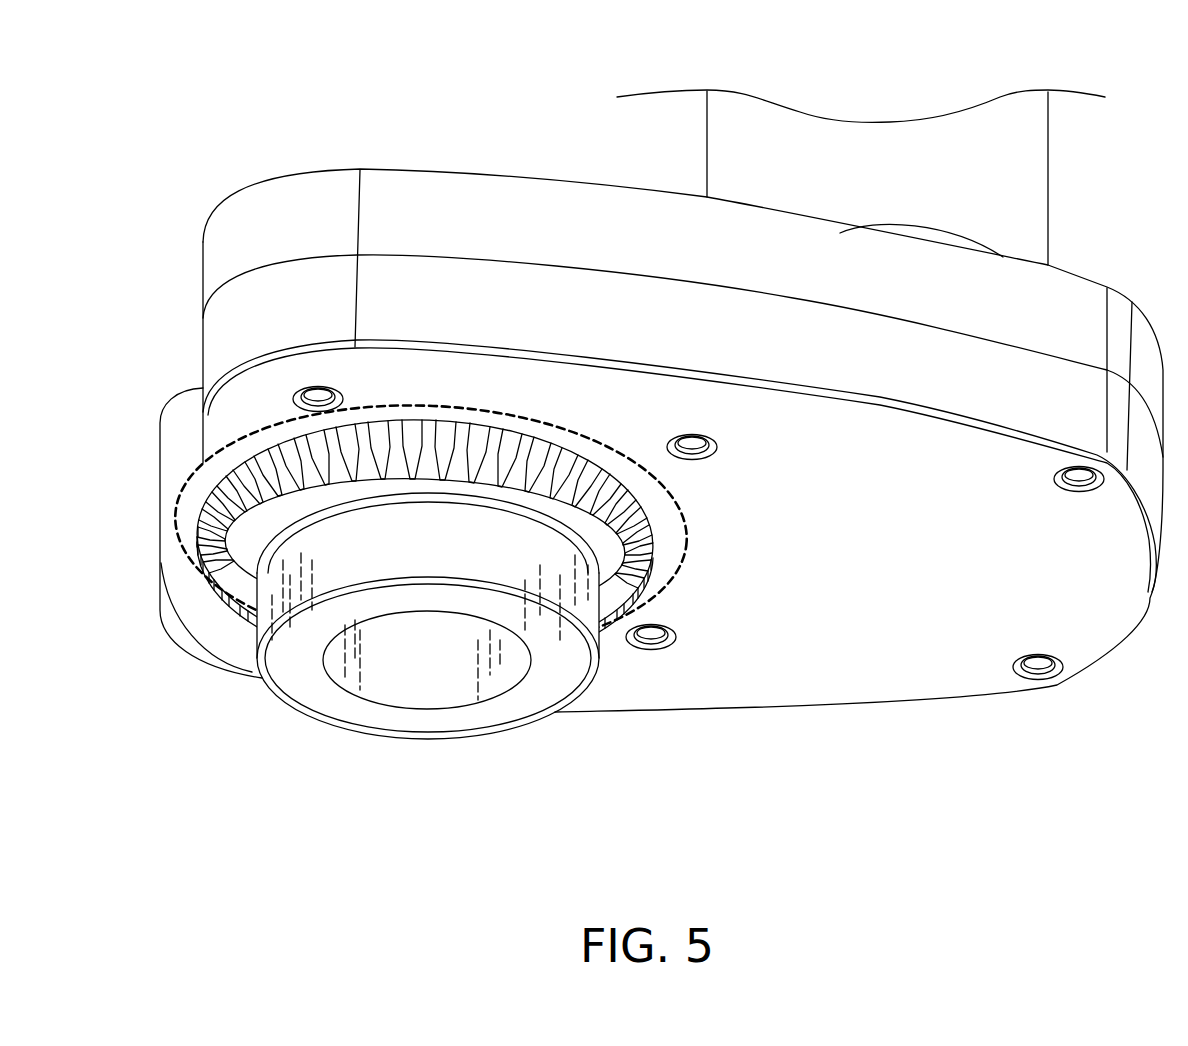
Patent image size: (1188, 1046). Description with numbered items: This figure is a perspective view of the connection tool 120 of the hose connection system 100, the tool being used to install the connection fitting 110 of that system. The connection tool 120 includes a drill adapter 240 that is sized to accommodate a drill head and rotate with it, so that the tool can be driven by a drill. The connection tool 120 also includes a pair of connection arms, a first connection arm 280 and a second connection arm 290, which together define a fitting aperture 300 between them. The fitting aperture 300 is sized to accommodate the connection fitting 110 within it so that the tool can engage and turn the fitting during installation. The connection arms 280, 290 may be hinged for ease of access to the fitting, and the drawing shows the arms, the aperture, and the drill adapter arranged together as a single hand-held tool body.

The hose connection system 100 is at (619, 398).
The connection fitting 110 is at (300, 713).
The connection tool 120 is at (243, 187).
The drill adapter 240 is at (1047, 207).
The first connection arm 280 is at (200, 265).
The second connection arm 290 is at (165, 420).
The fitting aperture 300 is at (220, 450).